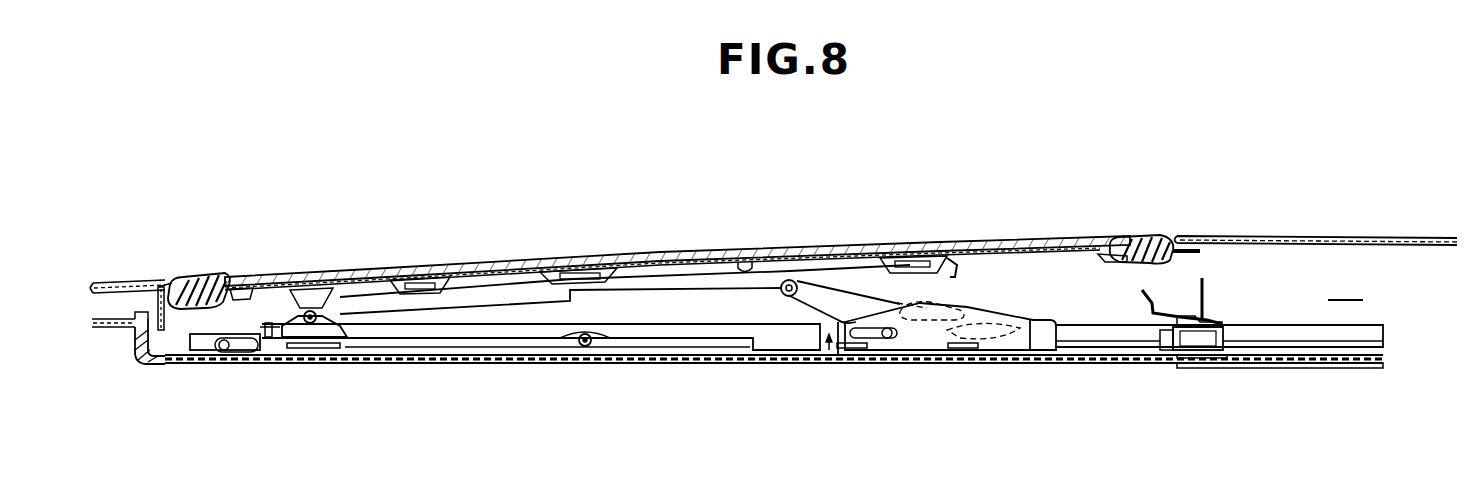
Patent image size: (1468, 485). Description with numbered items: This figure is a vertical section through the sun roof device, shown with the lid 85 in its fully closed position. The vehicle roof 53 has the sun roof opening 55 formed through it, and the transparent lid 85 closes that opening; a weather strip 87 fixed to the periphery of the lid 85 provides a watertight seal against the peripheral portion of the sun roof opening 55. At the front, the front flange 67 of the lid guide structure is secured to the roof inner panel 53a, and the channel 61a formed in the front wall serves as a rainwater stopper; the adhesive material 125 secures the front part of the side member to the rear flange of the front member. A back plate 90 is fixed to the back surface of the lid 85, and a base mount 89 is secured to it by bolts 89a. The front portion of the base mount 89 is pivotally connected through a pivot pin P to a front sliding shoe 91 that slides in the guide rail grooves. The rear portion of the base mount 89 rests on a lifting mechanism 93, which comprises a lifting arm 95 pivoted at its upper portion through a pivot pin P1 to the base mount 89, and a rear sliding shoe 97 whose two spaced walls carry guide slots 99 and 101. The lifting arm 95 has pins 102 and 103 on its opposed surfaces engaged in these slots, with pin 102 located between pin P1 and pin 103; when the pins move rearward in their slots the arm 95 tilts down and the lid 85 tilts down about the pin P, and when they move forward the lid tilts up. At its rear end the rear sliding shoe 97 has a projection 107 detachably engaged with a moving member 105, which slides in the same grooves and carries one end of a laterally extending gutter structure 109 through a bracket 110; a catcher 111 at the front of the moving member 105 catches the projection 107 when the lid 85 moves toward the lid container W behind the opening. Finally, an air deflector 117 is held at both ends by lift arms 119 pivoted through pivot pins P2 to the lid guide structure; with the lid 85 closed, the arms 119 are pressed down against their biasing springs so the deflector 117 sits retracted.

The lid 85 is at (684, 240).
The base mount 89 is at (582, 286).
The bolts 89a is at (423, 280).
The back plate 90 is at (745, 262).
The weather strip 87 is at (192, 280).
The front flange 67 is at (118, 320).
The channel 61a is at (148, 320).
The roof inner panel 53a is at (118, 332).
The vehicle roof 53 is at (1338, 236).
The sun roof opening 55 is at (1120, 280).
The pivot pin P is at (308, 310).
The front sliding shoe 91 is at (307, 350).
The adhesive material 125 is at (357, 363).
The air deflector 117 is at (203, 350).
The lift arms 119 is at (437, 338).
The pivot pins P2 is at (583, 348).
The lifting arm 95 is at (810, 360).
The pivot pin P1 is at (791, 279).
The lifting mechanism 93 is at (835, 358).
The guide slot 99 is at (905, 342).
The pin 102 is at (895, 352).
The pin 103 is at (950, 318).
The guide slot 101 is at (1000, 322).
The rear sliding shoe 97 is at (1027, 352).
The projection 107 is at (1057, 355).
The catcher 111 is at (1163, 350).
The moving member 105 is at (1228, 356).
The gutter structure 109 is at (1158, 302).
The bracket 110 is at (1208, 318).
The lid container W is at (1345, 290).